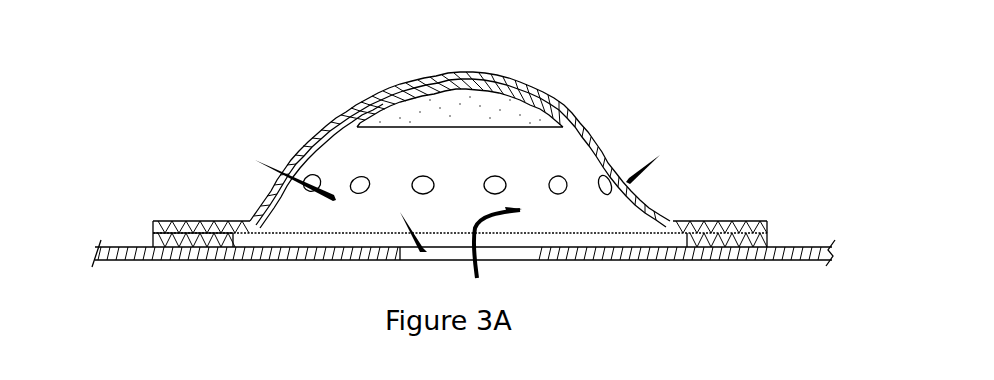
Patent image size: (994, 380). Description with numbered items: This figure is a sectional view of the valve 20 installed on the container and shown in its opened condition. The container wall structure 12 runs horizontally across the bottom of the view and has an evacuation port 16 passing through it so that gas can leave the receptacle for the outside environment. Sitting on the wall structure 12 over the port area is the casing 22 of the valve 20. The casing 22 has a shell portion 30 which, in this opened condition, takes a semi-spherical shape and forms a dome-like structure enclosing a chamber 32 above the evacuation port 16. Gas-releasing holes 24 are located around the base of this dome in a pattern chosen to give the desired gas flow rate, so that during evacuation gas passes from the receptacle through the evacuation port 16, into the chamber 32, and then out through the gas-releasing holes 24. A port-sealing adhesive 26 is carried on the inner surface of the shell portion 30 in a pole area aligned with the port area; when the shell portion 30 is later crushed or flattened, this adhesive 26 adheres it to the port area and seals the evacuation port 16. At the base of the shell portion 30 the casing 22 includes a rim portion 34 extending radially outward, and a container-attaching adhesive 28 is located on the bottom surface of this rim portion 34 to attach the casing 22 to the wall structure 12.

The wall structure 12 is at (635, 262).
The evacuation port 16 is at (400, 254).
The valve 20 is at (462, 159).
The casing 22 is at (566, 103).
The gas-releasing holes 24 is at (292, 170).
The port-sealing adhesive 26 is at (474, 73).
The container-attaching adhesive 28 is at (153, 240).
The shell portion 30 is at (385, 88).
The chamber 32 is at (484, 159).
The rim portion 34 is at (172, 238).